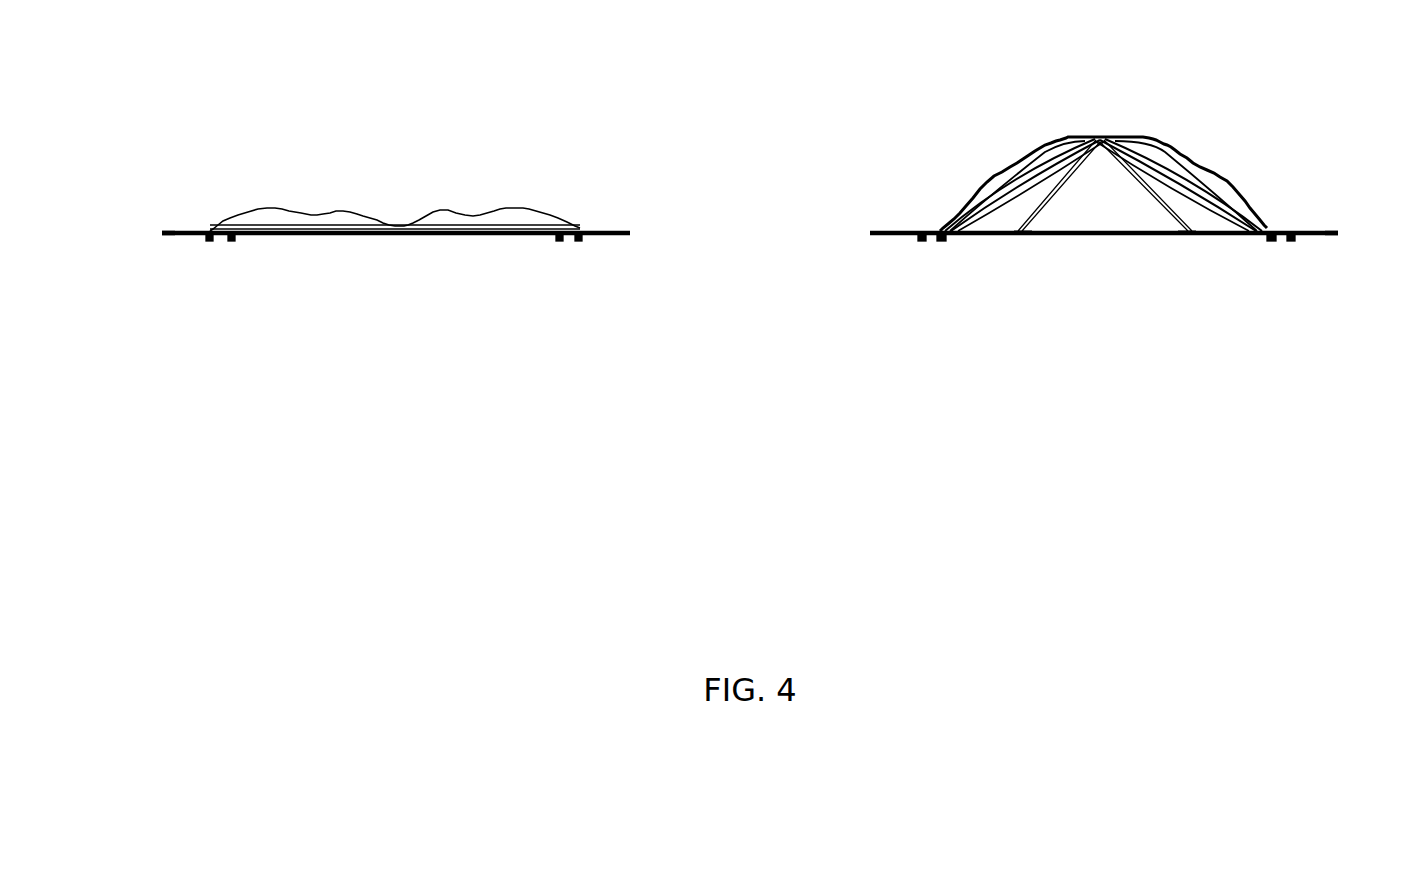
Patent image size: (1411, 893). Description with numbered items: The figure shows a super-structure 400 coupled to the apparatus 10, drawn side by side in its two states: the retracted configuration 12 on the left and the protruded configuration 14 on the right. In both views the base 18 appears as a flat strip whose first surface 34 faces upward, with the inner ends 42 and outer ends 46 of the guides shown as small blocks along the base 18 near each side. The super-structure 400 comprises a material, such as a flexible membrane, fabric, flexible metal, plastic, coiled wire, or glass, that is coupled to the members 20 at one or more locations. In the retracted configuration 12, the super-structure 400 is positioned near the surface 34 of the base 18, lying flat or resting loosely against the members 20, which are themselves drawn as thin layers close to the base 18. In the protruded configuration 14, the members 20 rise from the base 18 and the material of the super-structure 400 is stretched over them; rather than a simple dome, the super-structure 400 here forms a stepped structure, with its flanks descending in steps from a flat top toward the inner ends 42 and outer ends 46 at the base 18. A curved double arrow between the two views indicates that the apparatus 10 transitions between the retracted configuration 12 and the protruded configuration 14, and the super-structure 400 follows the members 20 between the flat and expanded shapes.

The apparatus 10 is at (836, 295).
The retracted configuration 12 is at (395, 532).
The protruded configuration 14 is at (1103, 532).
The base 18 is at (160, 237).
The members 20 is at (336, 232).
The first surface 34 is at (178, 229).
The inner ends 42 is at (233, 246).
The outer ends 46 is at (207, 246).
The super-structure 400 is at (464, 212).